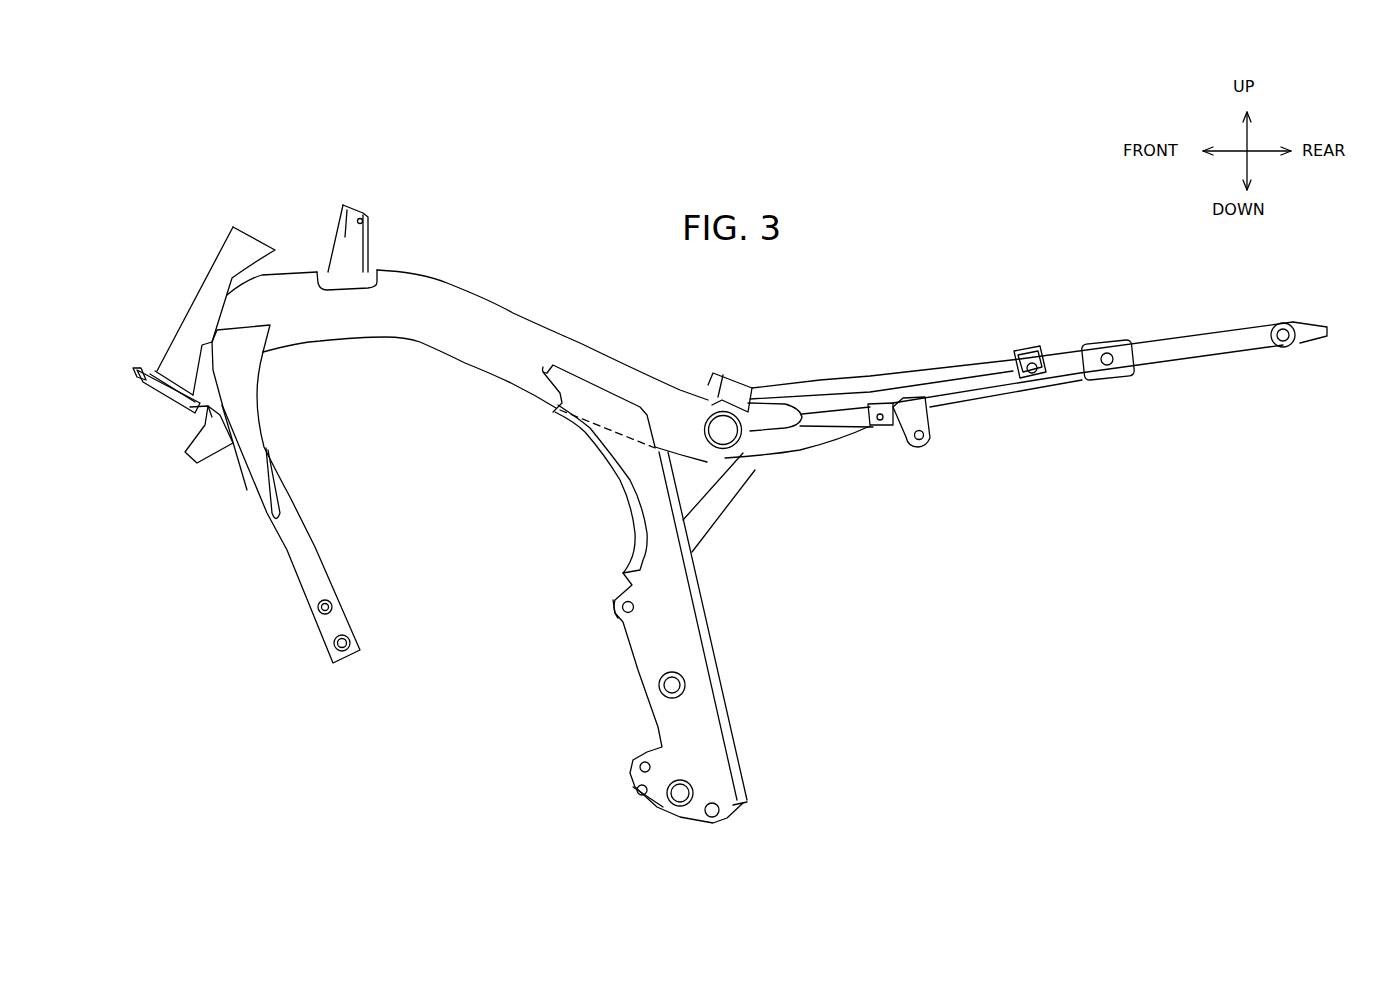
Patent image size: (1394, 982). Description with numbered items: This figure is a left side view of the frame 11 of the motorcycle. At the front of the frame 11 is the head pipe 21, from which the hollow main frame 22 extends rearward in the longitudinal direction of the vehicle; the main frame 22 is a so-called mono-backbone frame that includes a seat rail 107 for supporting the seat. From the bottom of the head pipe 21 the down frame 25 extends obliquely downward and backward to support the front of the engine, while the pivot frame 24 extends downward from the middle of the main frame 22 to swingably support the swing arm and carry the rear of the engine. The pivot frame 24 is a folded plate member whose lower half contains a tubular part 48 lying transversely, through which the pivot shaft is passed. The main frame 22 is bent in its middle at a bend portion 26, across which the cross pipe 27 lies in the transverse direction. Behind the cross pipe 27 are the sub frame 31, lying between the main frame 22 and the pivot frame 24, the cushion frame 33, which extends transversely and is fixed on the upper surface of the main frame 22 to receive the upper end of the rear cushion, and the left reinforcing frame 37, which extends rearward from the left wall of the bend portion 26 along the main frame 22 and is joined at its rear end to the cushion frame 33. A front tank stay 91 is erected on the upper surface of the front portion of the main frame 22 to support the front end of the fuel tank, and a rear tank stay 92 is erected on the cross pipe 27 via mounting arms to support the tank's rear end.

The frame 11 is at (213, 147).
The head pipe 21 is at (220, 278).
The main frame 22 is at (502, 328).
The pivot frame 24 is at (700, 720).
The down frame 25 is at (300, 563).
The bend portion 26 is at (720, 462).
The cross pipe 27 is at (724, 448).
The sub frame 31 is at (727, 497).
The cushion frame 33 is at (1020, 346).
The left reinforcing frame 37 is at (952, 385).
The tubular part 48 is at (684, 677).
The front tank stay 91 is at (348, 207).
The rear tank stay 92 is at (740, 393).
The seat rail 107 is at (1065, 352).